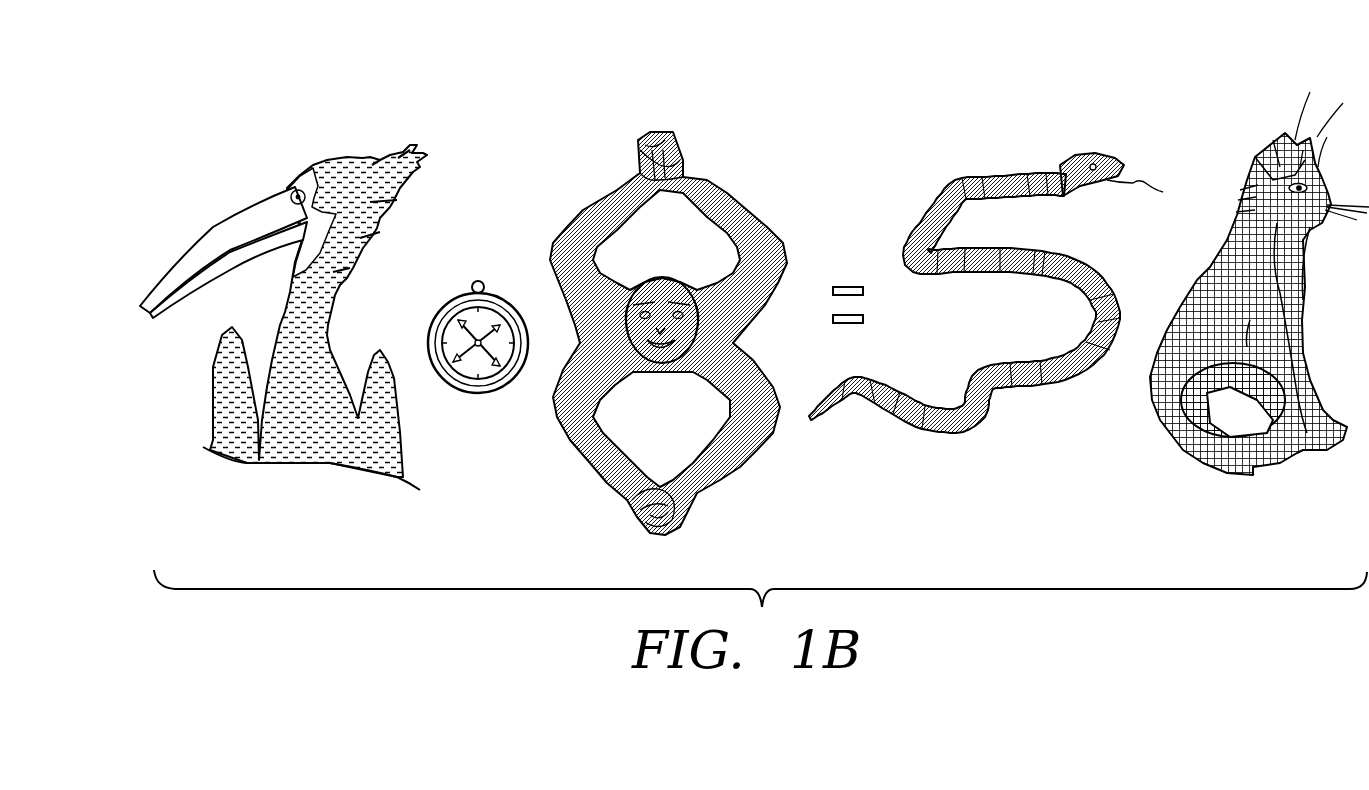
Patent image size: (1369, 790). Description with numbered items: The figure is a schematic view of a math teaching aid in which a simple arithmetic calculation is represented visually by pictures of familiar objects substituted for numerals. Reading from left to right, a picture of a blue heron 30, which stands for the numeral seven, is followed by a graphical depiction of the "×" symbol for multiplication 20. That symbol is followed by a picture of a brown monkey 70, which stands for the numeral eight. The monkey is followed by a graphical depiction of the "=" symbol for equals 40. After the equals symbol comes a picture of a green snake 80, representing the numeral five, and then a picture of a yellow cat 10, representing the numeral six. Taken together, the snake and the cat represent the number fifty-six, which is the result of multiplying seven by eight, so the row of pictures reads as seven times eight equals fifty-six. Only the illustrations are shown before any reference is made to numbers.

The yellow cat 10 is at (1270, 137).
The "×" symbol for multiplication 20 is at (485, 280).
The blue heron 30 is at (250, 200).
The "=" symbol for equals 40 is at (848, 283).
The brown monkey 70 is at (605, 180).
The green snake 80 is at (1080, 152).